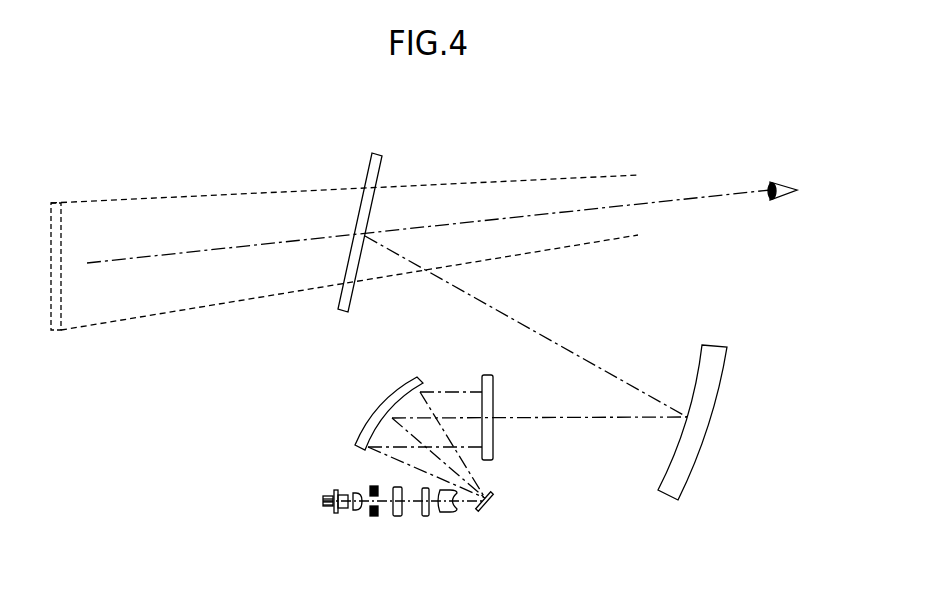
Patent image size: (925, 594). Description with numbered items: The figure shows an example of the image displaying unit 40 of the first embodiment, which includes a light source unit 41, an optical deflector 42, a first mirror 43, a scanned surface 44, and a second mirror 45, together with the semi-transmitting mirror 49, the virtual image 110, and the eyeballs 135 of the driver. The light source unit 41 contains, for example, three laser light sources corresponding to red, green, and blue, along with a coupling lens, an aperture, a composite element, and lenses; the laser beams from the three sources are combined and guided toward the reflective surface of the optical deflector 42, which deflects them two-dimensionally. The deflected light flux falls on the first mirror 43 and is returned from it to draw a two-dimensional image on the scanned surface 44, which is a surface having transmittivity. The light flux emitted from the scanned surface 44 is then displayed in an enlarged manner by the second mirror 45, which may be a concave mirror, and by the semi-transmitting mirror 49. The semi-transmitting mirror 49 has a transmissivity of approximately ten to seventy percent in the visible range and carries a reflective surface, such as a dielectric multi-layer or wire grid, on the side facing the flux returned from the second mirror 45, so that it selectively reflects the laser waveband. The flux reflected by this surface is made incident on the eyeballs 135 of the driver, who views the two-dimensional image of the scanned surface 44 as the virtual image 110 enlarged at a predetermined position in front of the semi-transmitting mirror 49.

The virtual image 110 is at (65, 318).
The semi-transmitting mirror 49 is at (365, 178).
The eyeballs 135 is at (791, 187).
The image displaying unit 40 is at (527, 469).
The light source unit 41 is at (406, 523).
The optical deflector 42 is at (496, 503).
The first mirror 43 is at (380, 411).
The scanned surface 44 is at (494, 404).
The second mirror 45 is at (703, 456).